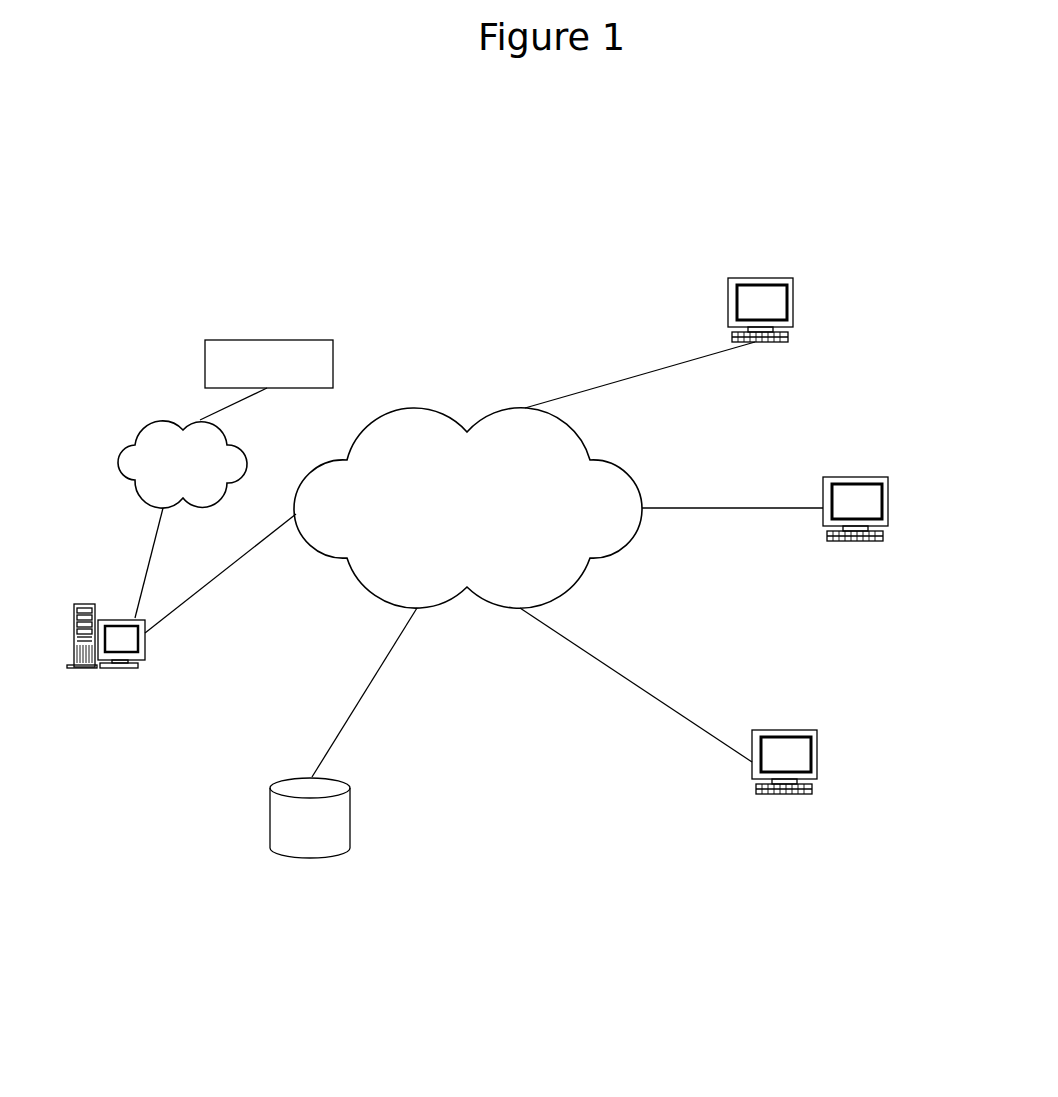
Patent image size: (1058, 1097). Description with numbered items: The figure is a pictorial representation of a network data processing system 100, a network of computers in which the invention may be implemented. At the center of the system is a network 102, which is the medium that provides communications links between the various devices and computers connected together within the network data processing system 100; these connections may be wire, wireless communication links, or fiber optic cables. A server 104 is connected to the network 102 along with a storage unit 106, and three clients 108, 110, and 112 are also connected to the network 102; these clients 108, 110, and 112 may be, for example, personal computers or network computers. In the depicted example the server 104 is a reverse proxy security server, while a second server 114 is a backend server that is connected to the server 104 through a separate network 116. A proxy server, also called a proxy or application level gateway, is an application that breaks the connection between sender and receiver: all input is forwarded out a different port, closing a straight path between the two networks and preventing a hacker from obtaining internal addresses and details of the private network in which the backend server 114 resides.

The network data processing system 100 is at (503, 870).
The network 102 is at (483, 518).
The server 104 is at (120, 620).
The storage unit 106 is at (310, 858).
The client 108 is at (760, 278).
The client 110 is at (855, 477).
The client 112 is at (785, 794).
The server 114 is at (268, 340).
The network 116 is at (167, 483).